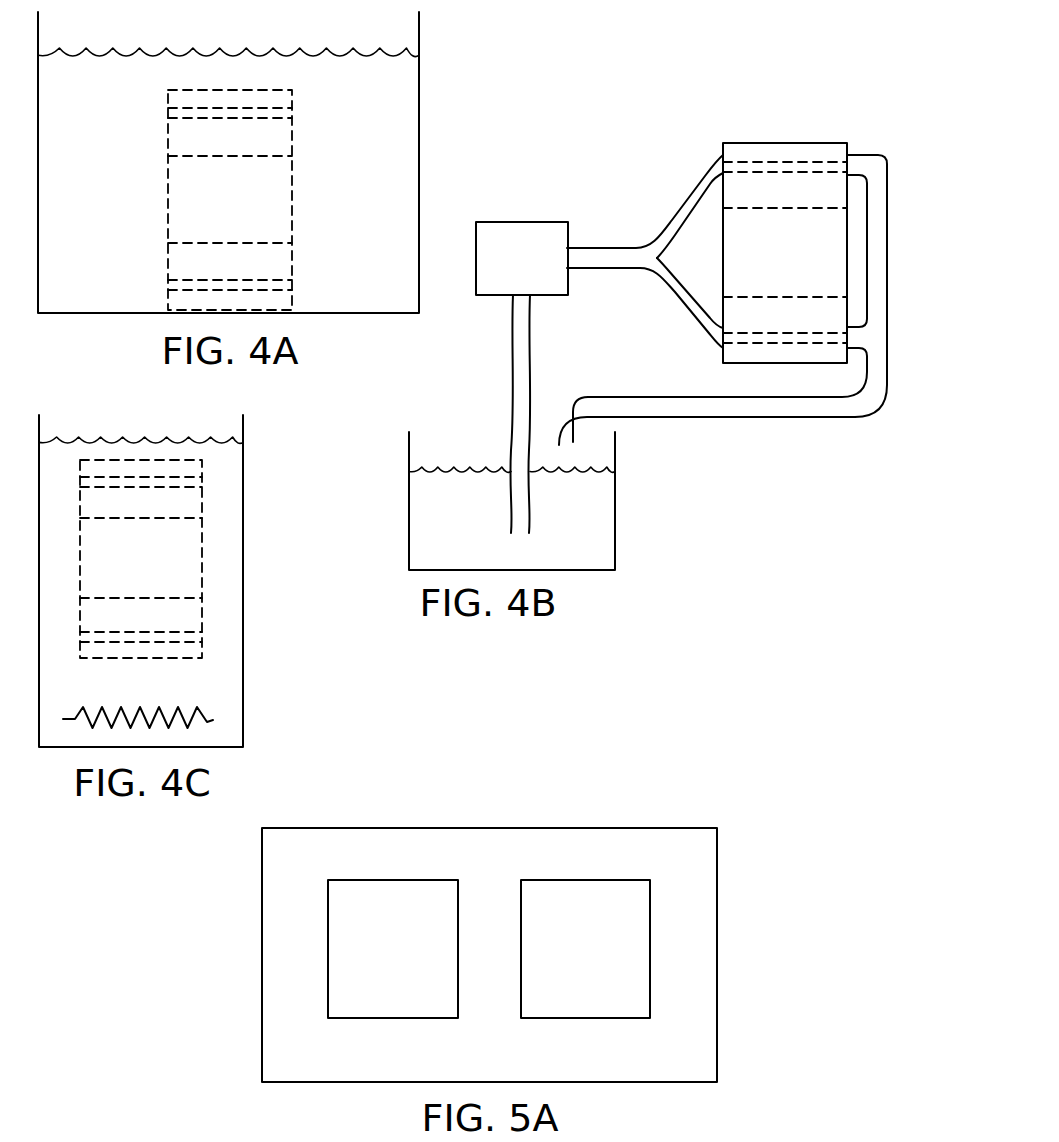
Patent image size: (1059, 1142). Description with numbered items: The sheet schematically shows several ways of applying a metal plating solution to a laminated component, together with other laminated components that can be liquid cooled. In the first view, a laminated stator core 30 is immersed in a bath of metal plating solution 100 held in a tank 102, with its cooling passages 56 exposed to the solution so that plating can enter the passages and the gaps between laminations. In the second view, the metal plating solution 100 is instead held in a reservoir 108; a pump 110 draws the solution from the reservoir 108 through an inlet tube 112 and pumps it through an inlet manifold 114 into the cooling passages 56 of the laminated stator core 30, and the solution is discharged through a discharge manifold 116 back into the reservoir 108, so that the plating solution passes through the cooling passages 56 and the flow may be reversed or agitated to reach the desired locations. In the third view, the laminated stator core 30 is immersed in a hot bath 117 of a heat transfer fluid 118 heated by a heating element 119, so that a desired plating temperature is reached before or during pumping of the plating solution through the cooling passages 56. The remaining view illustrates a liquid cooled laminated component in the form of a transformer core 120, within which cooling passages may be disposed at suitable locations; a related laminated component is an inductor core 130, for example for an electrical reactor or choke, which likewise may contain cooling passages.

In FIG. 4A, the laminated stator core 30 is at (293, 140).
In FIG. 4B, the laminated stator core 30 is at (765, 143).
In FIG. 4C, the laminated stator core 30 is at (118, 458).
In FIG. 4A, the cooling passages 56 is at (293, 108).
In FIG. 4B, the cooling passages 56 is at (808, 164).
In FIG. 4C, the cooling passages 56 is at (140, 481).
In FIG. 4A, the metal plating solution 100 is at (125, 178).
In FIG. 4B, the metal plating solution 100 is at (436, 523).
In FIG. 4A, the tank 102 is at (419, 40).
In FIG. 4B, the reservoir 108 is at (617, 450).
In FIG. 4B, the pump 110 is at (500, 268).
In FIG. 4B, the inlet tube 112 is at (532, 333).
In FIG. 4B, the inlet manifold 114 is at (623, 248).
In FIG. 4B, the discharge manifold 116 is at (888, 196).
In FIG. 4C, the hot bath 117 is at (244, 541).
In FIG. 4C, the heat transfer fluid 118 is at (230, 477).
In FIG. 4C, the heating element 119 is at (213, 719).
In FIG. 5A, the transformer core 120 is at (683, 828).
In FIG. 5A, the inductor core 130 is at (522, 1011).